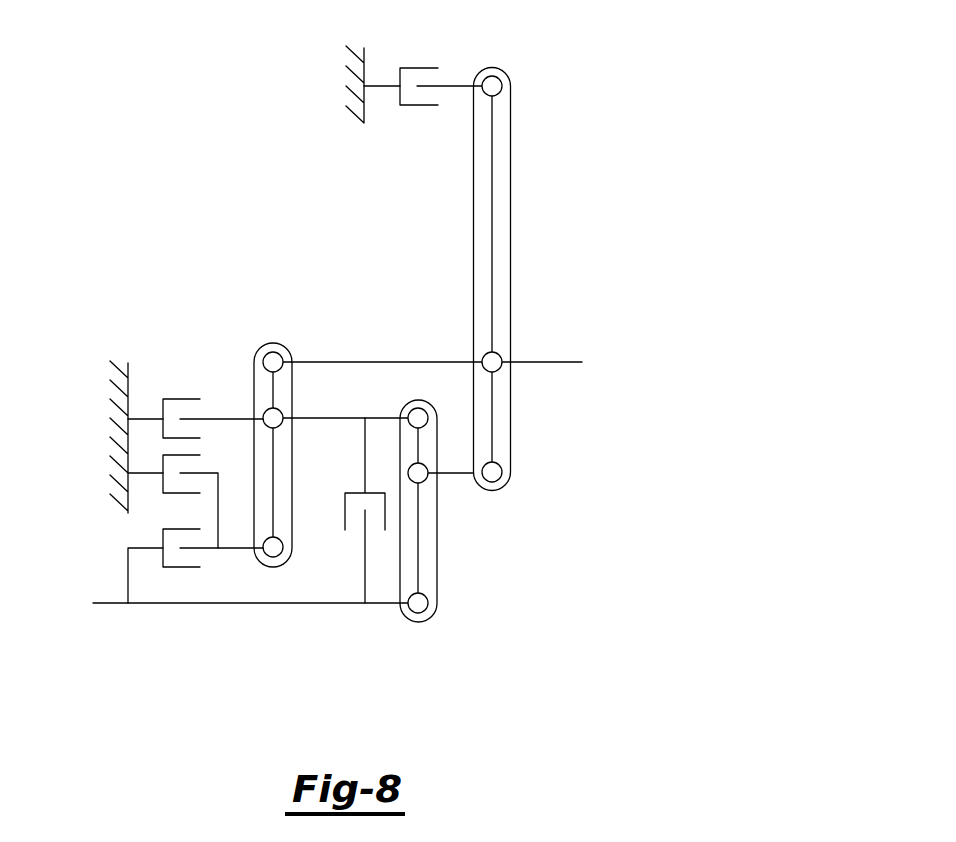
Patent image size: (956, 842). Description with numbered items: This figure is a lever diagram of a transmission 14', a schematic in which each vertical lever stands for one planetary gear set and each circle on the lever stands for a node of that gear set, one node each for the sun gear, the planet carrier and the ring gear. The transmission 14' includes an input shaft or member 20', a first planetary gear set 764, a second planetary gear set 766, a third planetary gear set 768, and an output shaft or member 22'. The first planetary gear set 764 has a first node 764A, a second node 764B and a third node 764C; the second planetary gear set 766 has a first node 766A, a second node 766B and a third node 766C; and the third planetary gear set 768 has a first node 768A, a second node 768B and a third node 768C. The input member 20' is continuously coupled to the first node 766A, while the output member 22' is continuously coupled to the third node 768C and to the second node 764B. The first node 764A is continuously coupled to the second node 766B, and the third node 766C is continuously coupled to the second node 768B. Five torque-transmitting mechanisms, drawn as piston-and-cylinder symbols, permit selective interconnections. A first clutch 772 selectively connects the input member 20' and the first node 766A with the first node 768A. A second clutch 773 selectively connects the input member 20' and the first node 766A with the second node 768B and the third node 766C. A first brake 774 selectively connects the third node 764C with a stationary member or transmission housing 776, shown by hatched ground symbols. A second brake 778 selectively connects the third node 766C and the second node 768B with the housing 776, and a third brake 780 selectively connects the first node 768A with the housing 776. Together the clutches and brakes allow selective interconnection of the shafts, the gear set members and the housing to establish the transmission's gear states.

The transmission 14' is at (106, 45).
The input shaft or member 20' is at (249, 621).
The output shaft or member 22' is at (451, 391).
The first planetary gear set 764 is at (514, 506).
The first node 764A is at (512, 478).
The second node 764B is at (500, 356).
The third node 764C is at (503, 80).
The second planetary gear set 766 is at (420, 645).
The first node 766A is at (428, 607).
The second node 766B is at (424, 481).
The third node 766C is at (410, 408).
The third planetary gear set 768 is at (268, 326).
The first node 768A is at (273, 558).
The second node 768B is at (265, 410).
The third node 768C is at (282, 355).
The first clutch 772 is at (172, 568).
The second clutch 773 is at (350, 493).
The first brake 774 is at (418, 105).
The stationary member or transmission housing 776 is at (353, 88).
The second brake 778 is at (175, 399).
The third brake 780 is at (175, 494).